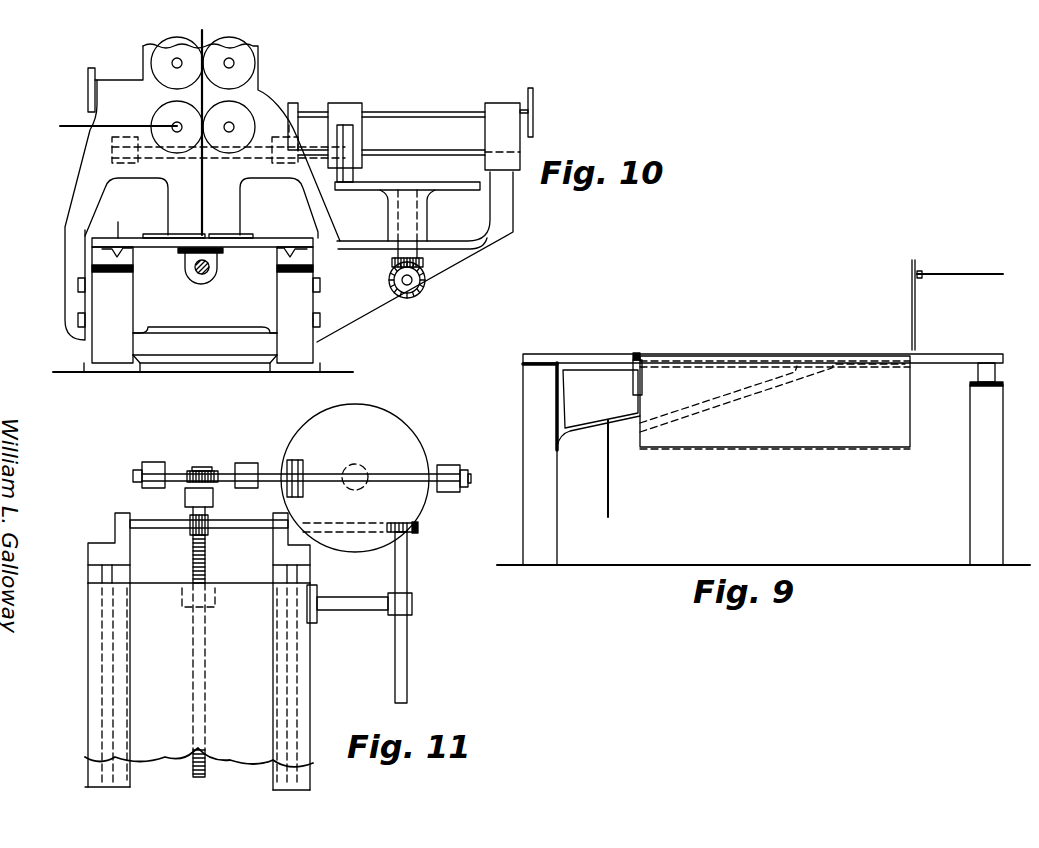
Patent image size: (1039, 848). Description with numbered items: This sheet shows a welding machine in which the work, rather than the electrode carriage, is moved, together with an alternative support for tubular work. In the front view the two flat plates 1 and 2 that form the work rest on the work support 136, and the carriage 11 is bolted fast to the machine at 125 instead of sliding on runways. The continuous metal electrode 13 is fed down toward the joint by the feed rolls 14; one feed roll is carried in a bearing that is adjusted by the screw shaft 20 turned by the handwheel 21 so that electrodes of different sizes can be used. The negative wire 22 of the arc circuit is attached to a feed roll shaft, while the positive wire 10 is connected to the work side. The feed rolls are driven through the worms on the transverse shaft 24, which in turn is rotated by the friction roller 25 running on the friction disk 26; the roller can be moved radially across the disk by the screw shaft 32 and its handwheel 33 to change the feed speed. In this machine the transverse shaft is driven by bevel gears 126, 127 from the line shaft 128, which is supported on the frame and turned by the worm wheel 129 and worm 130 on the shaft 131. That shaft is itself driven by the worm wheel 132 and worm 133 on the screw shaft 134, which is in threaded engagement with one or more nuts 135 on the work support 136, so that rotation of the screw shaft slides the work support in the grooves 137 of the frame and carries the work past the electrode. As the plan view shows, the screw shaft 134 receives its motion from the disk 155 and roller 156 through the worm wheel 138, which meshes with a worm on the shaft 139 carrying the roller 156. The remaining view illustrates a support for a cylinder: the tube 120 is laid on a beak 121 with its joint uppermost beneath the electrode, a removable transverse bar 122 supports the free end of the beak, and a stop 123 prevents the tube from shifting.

In FIG. 10, the flat plate 1 is at (150, 234).
In FIG. 10, the flat plate 2 is at (250, 236).
In FIG. 10, the positive wire 10 is at (118, 222).
In FIG. 9, the positive wire 10 is at (610, 506).
In FIG. 10, the carriage 11 is at (183, 172).
In FIG. 10, the metal electrode 13 is at (204, 208).
In FIG. 9, the metal electrode 13 is at (910, 299).
In FIG. 10, the feed rolls 14 is at (203, 95).
In FIG. 10, the screw shaft 20 is at (88, 91).
In FIG. 10, the handwheel 21 is at (88, 75).
In FIG. 10, the negative wire 22 is at (118, 114).
In FIG. 9, the negative wire 22 is at (960, 267).
In FIG. 10, the transverse shaft 24 is at (432, 150).
In FIG. 10, the friction roller 25 is at (352, 138).
In FIG. 10, the friction disk 26 is at (452, 183).
In FIG. 10, the screw shaft 32 is at (418, 105).
In FIG. 10, the handwheel 33 is at (533, 100).
In FIG. 9, the tube 120 is at (775, 402).
In FIG. 9, the beak 121 is at (600, 353).
In FIG. 9, the removable transverse bar 122 is at (980, 372).
In FIG. 9, the stop 123 is at (632, 382).
In FIG. 10, the bolts 125 is at (78, 300).
In FIG. 10, the bevel gear 126 is at (424, 262).
In FIG. 10, the bevel gear 127 is at (426, 286).
In FIG. 10, the line shaft 128 is at (406, 286).
In FIG. 11, the line shaft 128 is at (408, 649).
In FIG. 11, the worm wheel 129 is at (420, 527).
In FIG. 11, the worm 130 is at (396, 521).
In FIG. 11, the shaft 131 is at (256, 518).
In FIG. 11, the worm wheel 132 is at (193, 556).
In FIG. 11, the worm 133 is at (190, 528).
In FIG. 10, the screw shaft 134 is at (202, 276).
In FIG. 11, the screw shaft 134 is at (206, 556).
In FIG. 10, the nuts 135 is at (216, 266).
In FIG. 11, the nuts 135 is at (182, 610).
In FIG. 10, the work support 136 is at (165, 250).
In FIG. 11, the work support 136 is at (199, 651).
In FIG. 10, the grooves 137 is at (100, 252).
In FIG. 11, the grooves 137 is at (110, 776).
In FIG. 11, the worm wheel 138 is at (216, 469).
In FIG. 11, the shaft 139 is at (275, 472).
In FIG. 11, the disk 155 is at (355, 478).
In FIG. 11, the roller 156 is at (299, 462).